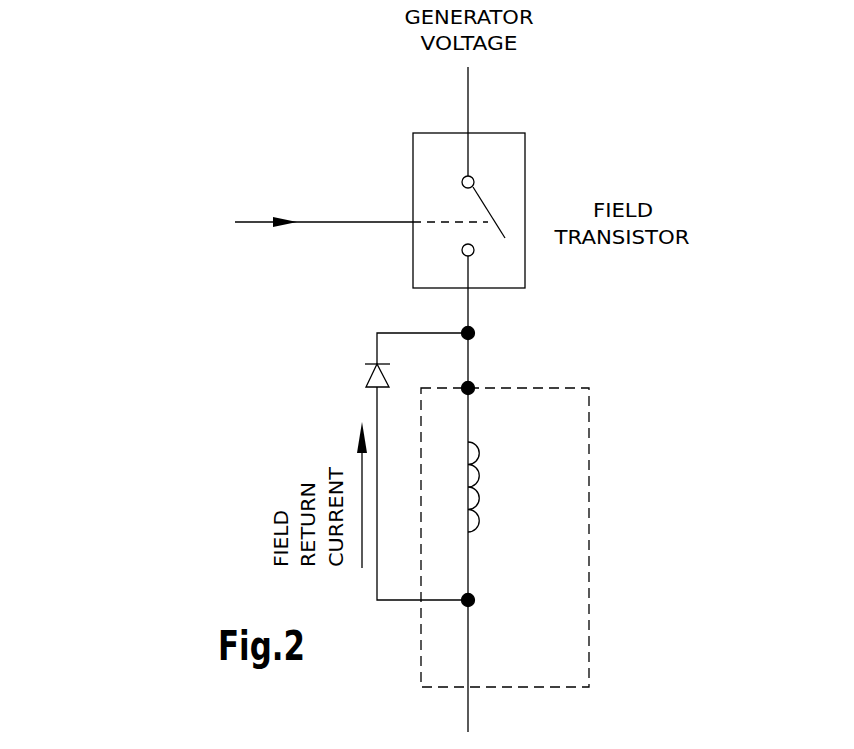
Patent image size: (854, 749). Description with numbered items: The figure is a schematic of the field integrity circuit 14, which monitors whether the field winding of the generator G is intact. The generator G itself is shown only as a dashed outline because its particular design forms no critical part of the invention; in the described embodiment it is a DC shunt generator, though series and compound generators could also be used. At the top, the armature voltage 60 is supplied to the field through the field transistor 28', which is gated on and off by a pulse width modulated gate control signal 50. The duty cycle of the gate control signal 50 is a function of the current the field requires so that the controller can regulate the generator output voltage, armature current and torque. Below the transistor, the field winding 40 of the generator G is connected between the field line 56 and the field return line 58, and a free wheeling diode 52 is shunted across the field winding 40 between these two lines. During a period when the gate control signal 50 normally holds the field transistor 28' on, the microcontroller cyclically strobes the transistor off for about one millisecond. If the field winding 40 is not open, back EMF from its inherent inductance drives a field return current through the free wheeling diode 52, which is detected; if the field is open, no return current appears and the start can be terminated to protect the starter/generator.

The field integrity circuit 14 is at (150, 573).
The armature voltage 60 is at (550, 141).
The field transistor 28' is at (563, 299).
The gate control signal 50 is at (239, 248).
The free wheeling diode 52 is at (366, 362).
The field line 56 is at (470, 417).
The field winding 40 is at (470, 532).
The field return line 58 is at (470, 563).
The generator G is at (589, 603).